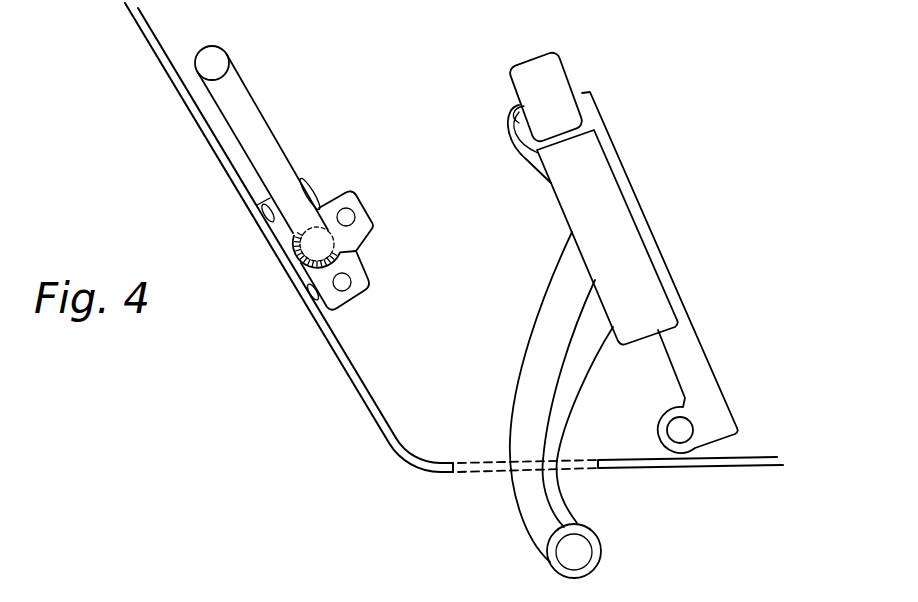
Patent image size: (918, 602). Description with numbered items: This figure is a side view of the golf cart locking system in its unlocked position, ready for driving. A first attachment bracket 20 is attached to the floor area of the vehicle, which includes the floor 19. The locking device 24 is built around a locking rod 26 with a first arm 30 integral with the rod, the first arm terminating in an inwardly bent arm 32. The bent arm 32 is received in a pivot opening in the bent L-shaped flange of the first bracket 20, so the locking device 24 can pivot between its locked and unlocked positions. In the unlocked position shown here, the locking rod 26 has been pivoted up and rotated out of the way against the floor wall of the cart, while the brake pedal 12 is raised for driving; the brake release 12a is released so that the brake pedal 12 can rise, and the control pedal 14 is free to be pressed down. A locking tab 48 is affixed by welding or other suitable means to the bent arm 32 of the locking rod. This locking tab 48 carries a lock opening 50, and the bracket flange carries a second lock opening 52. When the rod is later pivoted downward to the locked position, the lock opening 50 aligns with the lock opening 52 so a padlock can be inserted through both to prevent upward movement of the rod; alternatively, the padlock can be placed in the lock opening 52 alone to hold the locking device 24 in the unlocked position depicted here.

The brake release 12a is at (558, 77).
The brake pedal 12 is at (630, 252).
The control pedal 14 is at (716, 372).
The floor 19 is at (763, 457).
The first attachment bracket 20 is at (354, 256).
The locking device 24 is at (280, 116).
The locking rod 26 is at (212, 55).
The first arm 30 is at (283, 150).
The inwardly bent arm 32 is at (300, 250).
The locking tab 48 is at (346, 217).
The lock opening 50 is at (357, 199).
The lock opening 52 is at (343, 282).